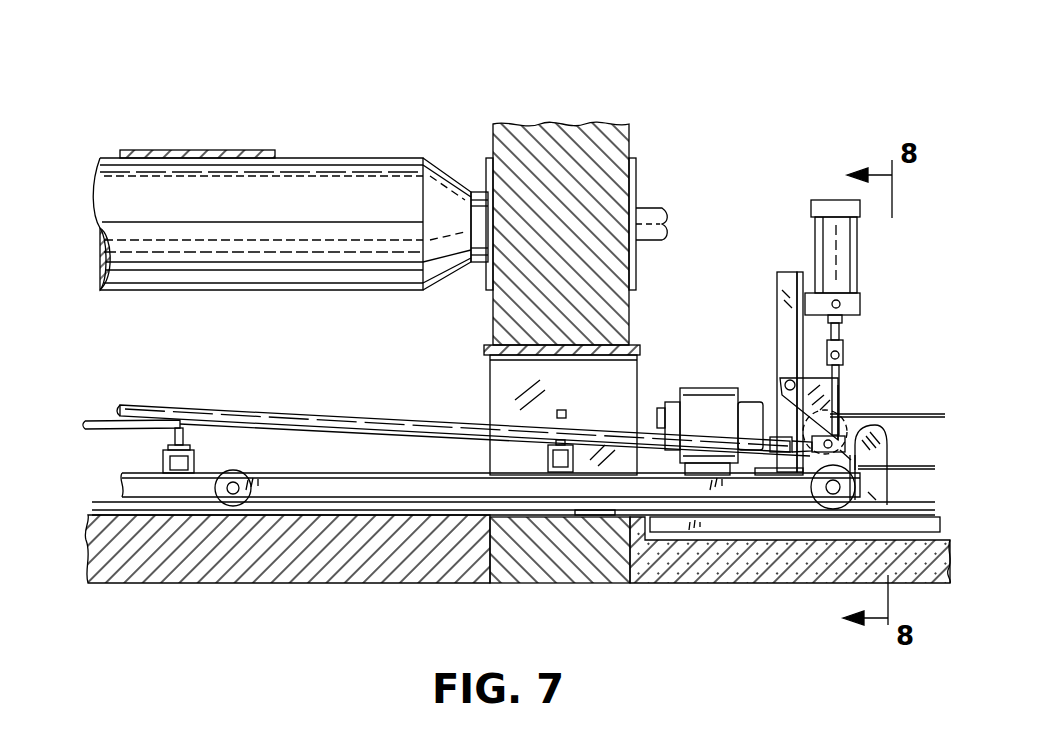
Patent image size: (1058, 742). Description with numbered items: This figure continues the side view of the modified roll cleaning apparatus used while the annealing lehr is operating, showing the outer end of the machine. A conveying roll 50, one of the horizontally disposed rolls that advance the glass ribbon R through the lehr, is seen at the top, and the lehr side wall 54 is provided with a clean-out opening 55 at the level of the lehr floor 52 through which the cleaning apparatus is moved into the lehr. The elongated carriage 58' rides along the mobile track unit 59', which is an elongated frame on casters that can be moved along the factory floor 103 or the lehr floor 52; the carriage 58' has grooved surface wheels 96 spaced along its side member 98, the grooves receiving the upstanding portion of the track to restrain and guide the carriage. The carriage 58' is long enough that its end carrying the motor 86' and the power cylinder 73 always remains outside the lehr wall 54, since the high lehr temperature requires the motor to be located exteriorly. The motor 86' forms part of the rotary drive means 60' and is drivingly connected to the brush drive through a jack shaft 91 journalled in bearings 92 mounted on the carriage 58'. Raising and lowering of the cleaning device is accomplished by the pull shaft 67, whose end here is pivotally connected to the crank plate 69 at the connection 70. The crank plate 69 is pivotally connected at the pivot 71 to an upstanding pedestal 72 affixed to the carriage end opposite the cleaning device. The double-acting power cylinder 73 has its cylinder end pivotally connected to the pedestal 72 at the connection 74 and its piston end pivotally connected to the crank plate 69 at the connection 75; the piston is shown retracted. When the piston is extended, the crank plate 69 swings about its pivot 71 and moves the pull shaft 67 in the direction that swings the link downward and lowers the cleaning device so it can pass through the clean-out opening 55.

The glass ribbon R is at (165, 150).
The conveying roll 50 is at (300, 165).
The lehr floor 52 is at (96, 565).
The lehr side wall 54 is at (585, 130).
The clean-out opening 55 is at (500, 355).
The carriage 58' is at (490, 469).
The mobile track unit 59' is at (808, 478).
The rotary drive means 60' is at (594, 400).
The pull shaft 67 is at (143, 405).
The crank plate 69 is at (840, 388).
The pivotal connection of pull shaft to crank plate 70 is at (838, 440).
The crank plate pivot 71 is at (788, 380).
The upstanding pedestal 72 is at (785, 278).
The double-acting power cylinder 73 is at (830, 240).
The cylinder end pivotal connection 74 is at (842, 304).
The piston end pivotal connection 75 is at (845, 360).
The motor 86' is at (710, 406).
The jack shaft 91 is at (100, 420).
The bearings 92 is at (172, 434).
The grooved surface wheels 96 is at (235, 484).
The side member 98 is at (430, 482).
The factory floor 103 is at (950, 542).